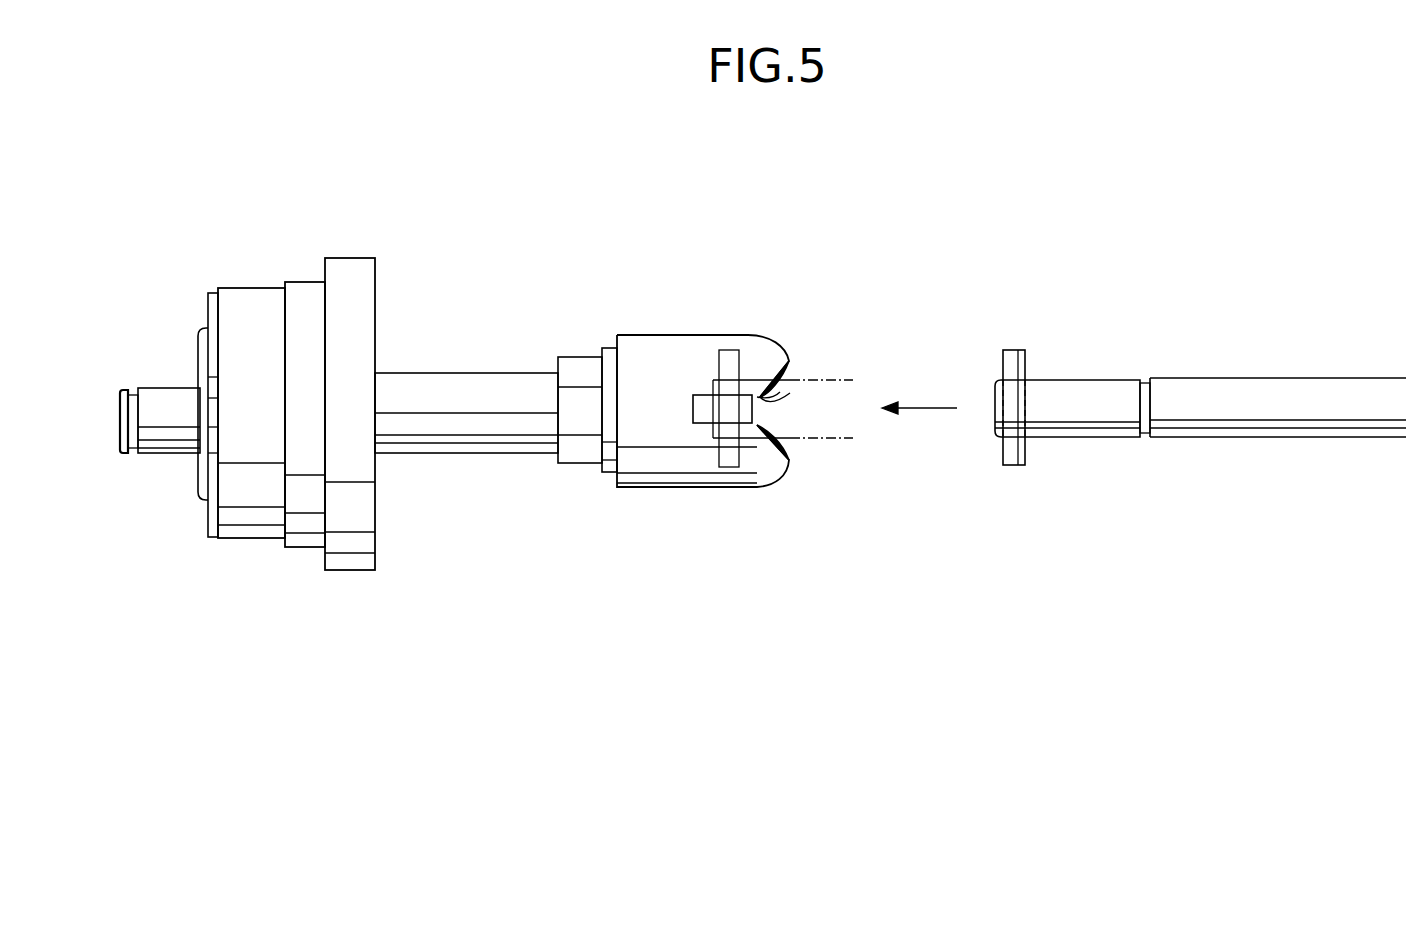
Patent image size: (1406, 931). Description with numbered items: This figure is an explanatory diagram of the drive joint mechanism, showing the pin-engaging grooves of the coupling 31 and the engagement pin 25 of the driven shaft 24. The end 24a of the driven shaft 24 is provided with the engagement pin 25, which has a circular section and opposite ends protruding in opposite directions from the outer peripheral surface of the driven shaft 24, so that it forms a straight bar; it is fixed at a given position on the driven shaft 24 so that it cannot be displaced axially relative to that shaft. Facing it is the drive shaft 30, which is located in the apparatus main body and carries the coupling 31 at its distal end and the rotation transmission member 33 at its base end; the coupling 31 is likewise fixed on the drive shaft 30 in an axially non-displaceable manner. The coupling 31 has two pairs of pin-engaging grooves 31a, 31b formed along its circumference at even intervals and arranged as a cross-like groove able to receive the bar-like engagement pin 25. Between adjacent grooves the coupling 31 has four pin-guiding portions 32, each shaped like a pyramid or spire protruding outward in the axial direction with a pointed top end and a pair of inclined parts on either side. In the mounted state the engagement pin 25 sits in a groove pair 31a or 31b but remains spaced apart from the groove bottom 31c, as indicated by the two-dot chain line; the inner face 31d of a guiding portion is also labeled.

The driven shaft 24 is at (1228, 385).
The end of the driven shaft 24a is at (1090, 382).
The engagement pin 25 is at (727, 350).
The drive shaft 30 is at (463, 378).
The coupling 31 is at (640, 348).
The pin-engaging groove 31a is at (705, 417).
The pin-engaging groove 31b is at (762, 506).
The groove bottom 31c is at (693, 410).
The jaw inner face 31d is at (770, 400).
The pin-guiding portion 32 is at (765, 340).
The rotation transmission member 33 is at (305, 290).